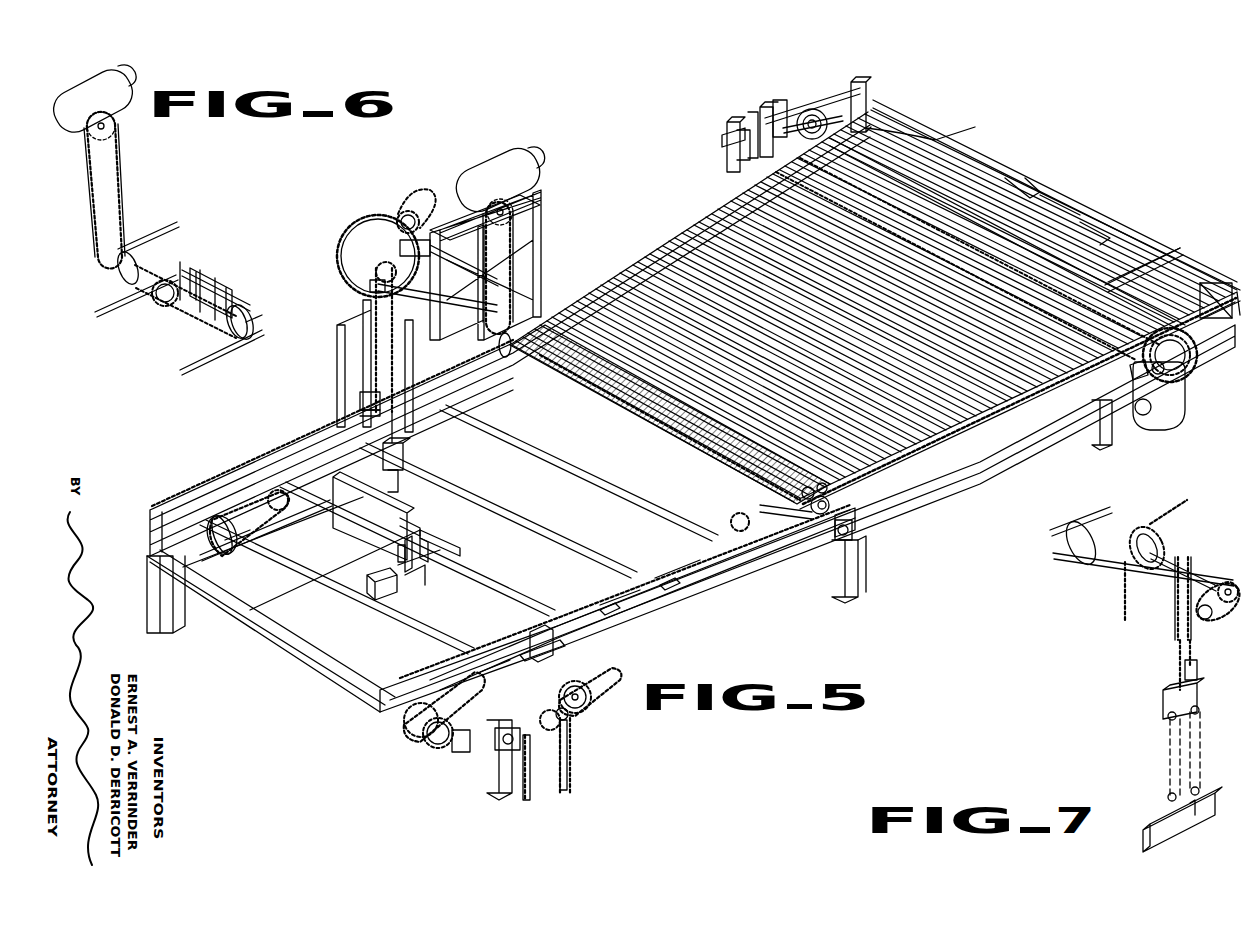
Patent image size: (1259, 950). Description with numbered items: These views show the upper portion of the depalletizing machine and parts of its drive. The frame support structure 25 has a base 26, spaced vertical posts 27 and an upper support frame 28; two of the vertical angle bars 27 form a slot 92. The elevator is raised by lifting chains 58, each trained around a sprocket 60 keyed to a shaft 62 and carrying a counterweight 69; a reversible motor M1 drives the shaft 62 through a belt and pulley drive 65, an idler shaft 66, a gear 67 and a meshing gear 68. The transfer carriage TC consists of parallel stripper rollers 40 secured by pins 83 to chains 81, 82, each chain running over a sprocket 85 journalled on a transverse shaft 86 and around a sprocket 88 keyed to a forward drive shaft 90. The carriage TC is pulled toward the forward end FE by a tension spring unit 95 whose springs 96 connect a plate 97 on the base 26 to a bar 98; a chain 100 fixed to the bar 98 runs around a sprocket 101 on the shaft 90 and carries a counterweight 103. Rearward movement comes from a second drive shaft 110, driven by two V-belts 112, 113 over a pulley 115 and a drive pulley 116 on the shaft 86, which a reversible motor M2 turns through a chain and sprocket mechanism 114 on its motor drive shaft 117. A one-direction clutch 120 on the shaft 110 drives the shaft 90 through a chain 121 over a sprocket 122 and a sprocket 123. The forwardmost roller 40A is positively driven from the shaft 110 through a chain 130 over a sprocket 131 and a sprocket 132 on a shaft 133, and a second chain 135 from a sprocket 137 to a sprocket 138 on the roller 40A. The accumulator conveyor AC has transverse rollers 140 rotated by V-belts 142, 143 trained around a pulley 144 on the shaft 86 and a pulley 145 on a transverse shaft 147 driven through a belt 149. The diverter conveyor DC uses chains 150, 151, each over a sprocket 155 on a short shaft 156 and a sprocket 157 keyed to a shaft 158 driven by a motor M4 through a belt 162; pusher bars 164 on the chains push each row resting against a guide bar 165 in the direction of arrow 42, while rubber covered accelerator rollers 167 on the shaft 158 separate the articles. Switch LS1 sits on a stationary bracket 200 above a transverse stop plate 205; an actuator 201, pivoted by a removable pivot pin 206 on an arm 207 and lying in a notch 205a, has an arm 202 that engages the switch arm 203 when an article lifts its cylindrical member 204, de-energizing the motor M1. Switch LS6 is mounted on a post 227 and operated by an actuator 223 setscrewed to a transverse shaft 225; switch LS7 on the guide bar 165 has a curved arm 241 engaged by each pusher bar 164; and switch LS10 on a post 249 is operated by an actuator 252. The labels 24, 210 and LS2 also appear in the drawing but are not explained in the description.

In FIG. 5, the conveyor section 24 is at (590, 210).
In FIG. 5, the frame support structure 25 is at (490, 797).
In FIG. 7, the base 26 is at (1150, 826).
In FIG. 5, the vertical posts 27 is at (170, 628).
In FIG. 5, the upper support frame 28 is at (330, 425).
In FIG. 6, the stripper rollers 40 is at (205, 283).
In FIG. 5, the stripper rollers 40 is at (600, 400).
In FIG. 5, the forwardmost roller 40A is at (640, 420).
In FIG. 5, the arrow 42 is at (1242, 378).
In FIG. 5, the lifting chain 58 is at (340, 350).
In FIG. 5, the sprocket 60 is at (374, 270).
In FIG. 5, the shaft 62 is at (372, 288).
In FIG. 5, the belt and pulley drive 65 is at (416, 188).
In FIG. 5, the idler shaft 66 is at (405, 248).
In FIG. 5, the gear 67 is at (413, 214).
In FIG. 5, the gear 68 is at (368, 222).
In FIG. 5, the counterweight 69 is at (404, 458).
In FIG. 6, the chain 81 is at (105, 305).
In FIG. 5, the chain 81 is at (300, 460).
In FIG. 5, the chain 82 is at (525, 795).
In FIG. 7, the chain 82 is at (1185, 508).
In FIG. 6, the pins 83 is at (170, 272).
In FIG. 5, the pins 83 is at (560, 390).
In FIG. 6, the sprocket 85 is at (155, 303).
In FIG. 5, the sprocket 85 is at (525, 375).
In FIG. 6, the transverse shaft 86 is at (252, 330).
In FIG. 5, the transverse shaft 86 is at (852, 532).
In FIG. 5, the sprocket 88 is at (262, 495).
In FIG. 7, the sprocket 88 is at (1160, 535).
In FIG. 5, the forward transverse rotary drive shaft 90 is at (345, 580).
In FIG. 7, the forward transverse rotary drive shaft 90 is at (1158, 548).
In FIG. 5, the slot 92 is at (866, 575).
In FIG. 7, the tension spring unit 95 is at (1160, 712).
In FIG. 7, the springs 96 is at (1200, 710).
In FIG. 7, the plate 97 is at (1190, 815).
In FIG. 7, the bar 98 is at (1165, 696).
In FIG. 5, the chain 100 is at (218, 512).
In FIG. 7, the chain 100 is at (1178, 640).
In FIG. 7, the sprocket 101 is at (1178, 560).
In FIG. 7, the counterweight 103 is at (1183, 668).
In FIG. 5, the second transverse drive shaft 110 is at (310, 625).
In FIG. 7, the second transverse drive shaft 110 is at (1110, 562).
In FIG. 6, the V-belt 112 is at (183, 360).
In FIG. 5, the V-belt 112 is at (320, 440).
In FIG. 5, the V-belt 113 is at (680, 580).
In FIG. 7, the V-belt 113 is at (1098, 510).
In FIG. 6, the chain and sprocket mechanism 114 is at (118, 160).
In FIG. 5, the chain and sprocket mechanism 114 is at (512, 240).
In FIG. 5, the pulley 115 is at (215, 555).
In FIG. 7, the pulley 115 is at (1072, 552).
In FIG. 6, the drive pulley 116 is at (243, 340).
In FIG. 5, the drive pulley 116 is at (510, 365).
In FIG. 6, the motor drive shaft 117 is at (108, 128).
In FIG. 5, the motor drive shaft 117 is at (512, 212).
In FIG. 5, the one-direction clutch 120 is at (550, 735).
In FIG. 7, the one-direction clutch 120 is at (1176, 610).
In FIG. 5, the chain 121 is at (600, 684).
In FIG. 7, the chain 121 is at (1236, 588).
In FIG. 5, the sprocket 122 is at (588, 698).
In FIG. 7, the sprocket 122 is at (1230, 603).
In FIG. 5, the sprocket 123 is at (572, 722).
In FIG. 7, the sprocket 123 is at (1208, 620).
In FIG. 5, the chain 130 is at (408, 728).
In FIG. 5, the sprocket 131 is at (540, 640).
In FIG. 5, the sprocket 132 is at (425, 740).
In FIG. 5, the shaft 133 is at (405, 722).
In FIG. 5, the second chain 135 is at (790, 508).
In FIG. 5, the sprocket 137 is at (470, 750).
In FIG. 5, the sprocket 138 is at (800, 494).
In FIG. 5, the transverse rollers 140 is at (600, 295).
In FIG. 6, the V-belt 142 is at (173, 232).
In FIG. 5, the V-belt 142 is at (727, 165).
In FIG. 5, the V-belt 143 is at (855, 512).
In FIG. 6, the pulley 144 is at (120, 269).
In FIG. 5, the pulley 144 is at (830, 508).
In FIG. 5, the pulley 145 is at (900, 112).
In FIG. 5, the transverse shaft 147 is at (975, 170).
In FIG. 5, the belt 149 is at (1060, 215).
In FIG. 5, the chain 150 is at (1030, 195).
In FIG. 5, the chain 151 is at (1090, 235).
In FIG. 5, the sprocket 155 is at (816, 115).
In FIG. 5, the short shaft 156 is at (815, 121).
In FIG. 5, the sprocket 157 is at (1160, 378).
In FIG. 5, the shaft 158 is at (1150, 415).
In FIG. 5, the belt 162 is at (1185, 372).
In FIG. 5, the pusher bars 164 is at (930, 150).
In FIG. 5, the guide bar 165 is at (1000, 190).
In FIG. 5, the accelerator rollers 167 is at (1192, 370).
In FIG. 5, the stationary bracket 200 is at (335, 655).
In FIG. 5, the actuator 201 is at (405, 545).
In FIG. 5, the arm 202 is at (398, 585).
In FIG. 5, the switch arm 203 is at (420, 592).
In FIG. 5, the cylindrical member 204 is at (460, 548).
In FIG. 5, the transverse stop plate 205 is at (400, 510).
In FIG. 5, the notch 205a is at (420, 530).
In FIG. 5, the removable pivot pin 206 is at (440, 562).
In FIG. 5, the arm 207 is at (400, 552).
In FIG. 5, the switch mount 210 is at (360, 410).
In FIG. 5, the actuator 223 is at (800, 110).
In FIG. 5, the transverse shaft 225 is at (815, 108).
In FIG. 5, the post 227 is at (778, 100).
In FIG. 5, the curved arm 241 is at (880, 100).
In FIG. 5, the post 249 is at (735, 158).
In FIG. 5, the actuator 252 is at (748, 115).
In FIG. 5, the accumulator conveyor AC is at (668, 232).
In FIG. 5, the diverter conveyor DC is at (1102, 255).
In FIG. 5, the forward end FE is at (335, 666).
In FIG. 6, the transfer carriage TC is at (212, 266).
In FIG. 5, the transfer carriage TC is at (665, 435).
In FIG. 5, the reversible motor M1 is at (520, 300).
In FIG. 6, the reversible motor M2 is at (120, 86).
In FIG. 5, the reversible motor M2 is at (498, 160).
In FIG. 5, the motor M4 is at (1150, 428).
In FIG. 5, the switch LS1 is at (410, 595).
In FIG. 5, the limit switch LS2 is at (360, 398).
In FIG. 5, the switch LS6 is at (760, 110).
In FIG. 5, the switch LS7 is at (868, 84).
In FIG. 5, the switch LS10 is at (725, 135).